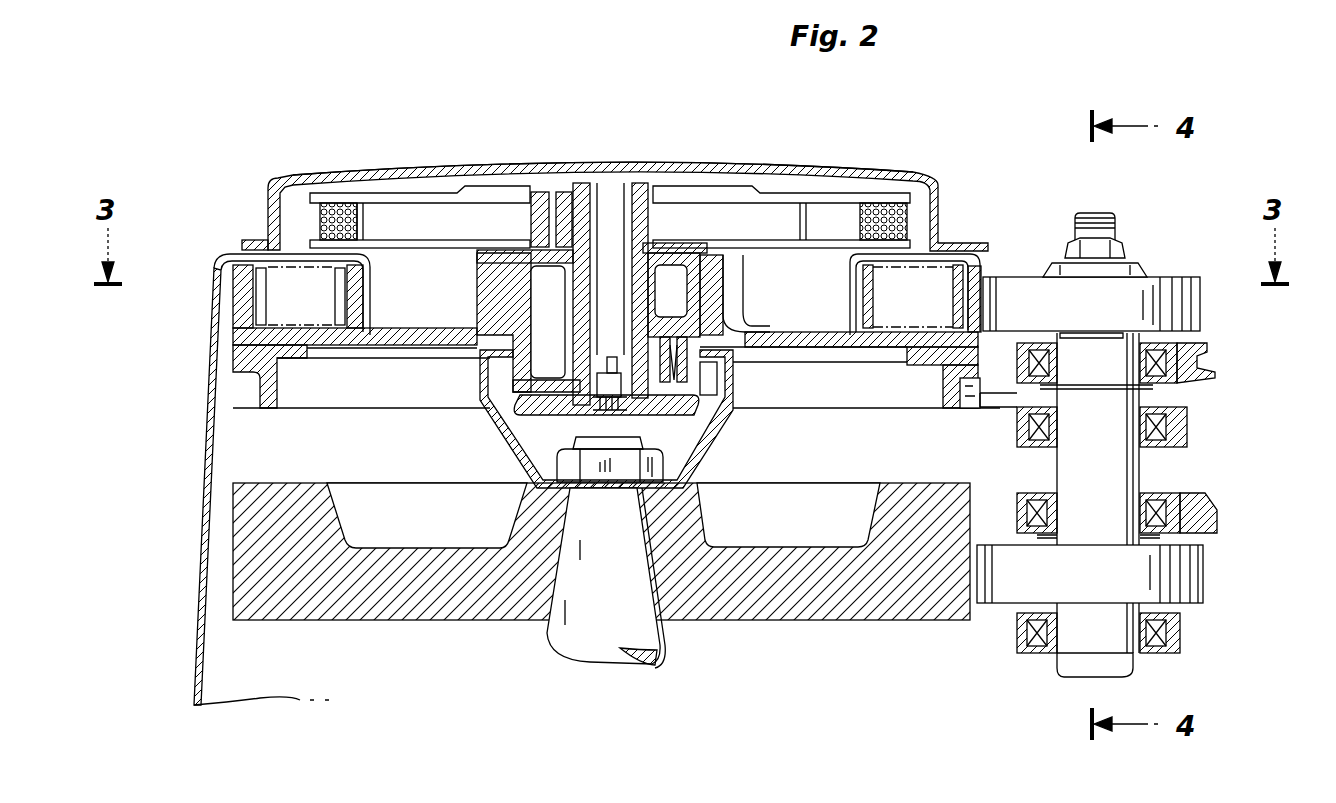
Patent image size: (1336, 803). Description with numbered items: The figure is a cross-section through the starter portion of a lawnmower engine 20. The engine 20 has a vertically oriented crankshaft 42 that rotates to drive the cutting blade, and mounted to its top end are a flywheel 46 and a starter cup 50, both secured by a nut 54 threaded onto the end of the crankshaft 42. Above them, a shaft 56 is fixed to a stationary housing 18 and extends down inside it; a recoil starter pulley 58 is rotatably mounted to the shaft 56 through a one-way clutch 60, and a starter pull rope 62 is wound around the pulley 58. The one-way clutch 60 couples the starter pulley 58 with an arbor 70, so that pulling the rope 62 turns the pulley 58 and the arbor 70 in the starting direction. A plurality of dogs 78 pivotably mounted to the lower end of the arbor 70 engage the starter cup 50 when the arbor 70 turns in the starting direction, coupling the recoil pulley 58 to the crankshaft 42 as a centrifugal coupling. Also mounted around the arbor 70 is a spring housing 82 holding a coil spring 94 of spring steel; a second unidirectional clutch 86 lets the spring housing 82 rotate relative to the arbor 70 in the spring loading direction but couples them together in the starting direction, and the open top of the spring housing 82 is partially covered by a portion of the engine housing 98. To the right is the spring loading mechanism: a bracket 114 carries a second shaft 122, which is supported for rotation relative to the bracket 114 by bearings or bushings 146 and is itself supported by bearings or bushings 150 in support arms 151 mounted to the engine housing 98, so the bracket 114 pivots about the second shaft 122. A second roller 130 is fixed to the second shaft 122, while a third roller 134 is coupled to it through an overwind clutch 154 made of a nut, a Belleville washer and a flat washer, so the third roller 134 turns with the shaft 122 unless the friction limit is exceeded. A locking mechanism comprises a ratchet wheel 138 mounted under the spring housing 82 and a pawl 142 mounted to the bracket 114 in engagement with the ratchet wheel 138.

The stationary housing 18 is at (386, 174).
The engine 20 is at (690, 156).
The crankshaft 42 is at (572, 612).
The flywheel 46 is at (764, 588).
The starter cup 50 is at (497, 424).
The nut 54 is at (662, 466).
The shaft 56 is at (612, 246).
The recoil starter pulley 58 is at (812, 222).
The one-way clutch 60 is at (566, 192).
The starter pull rope 62 is at (905, 226).
The arbor 70 is at (500, 296).
The dogs 78 is at (704, 384).
The spring housing 82 is at (245, 292).
The second unidirectional clutch 86 is at (713, 296).
The spring 94 is at (955, 285).
The engine housing 98 is at (203, 603).
The bracket 114 is at (1185, 423).
The second shaft 122 is at (1080, 630).
The second roller 130 is at (1200, 568).
The third roller 134 is at (1197, 306).
The ratchet wheel 138 is at (968, 390).
The pawl 142 is at (1012, 402).
The bearings or bushings 146 is at (1172, 446).
The bearings or bushings 150 is at (1152, 380).
The support arms 151 is at (1199, 356).
The overwind clutch 154 is at (1195, 220).